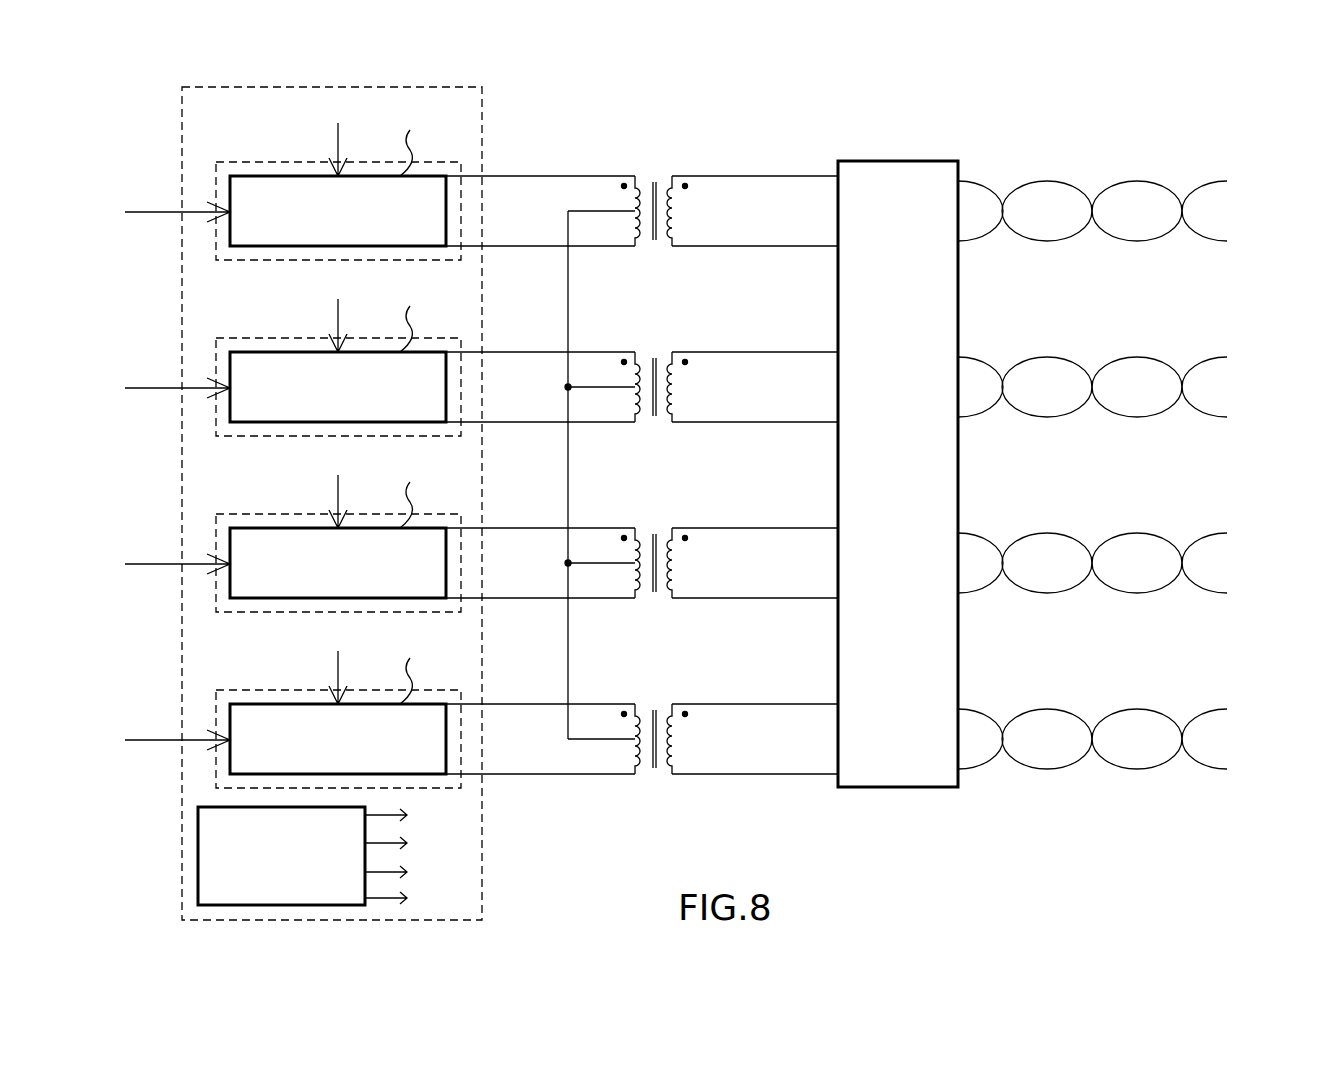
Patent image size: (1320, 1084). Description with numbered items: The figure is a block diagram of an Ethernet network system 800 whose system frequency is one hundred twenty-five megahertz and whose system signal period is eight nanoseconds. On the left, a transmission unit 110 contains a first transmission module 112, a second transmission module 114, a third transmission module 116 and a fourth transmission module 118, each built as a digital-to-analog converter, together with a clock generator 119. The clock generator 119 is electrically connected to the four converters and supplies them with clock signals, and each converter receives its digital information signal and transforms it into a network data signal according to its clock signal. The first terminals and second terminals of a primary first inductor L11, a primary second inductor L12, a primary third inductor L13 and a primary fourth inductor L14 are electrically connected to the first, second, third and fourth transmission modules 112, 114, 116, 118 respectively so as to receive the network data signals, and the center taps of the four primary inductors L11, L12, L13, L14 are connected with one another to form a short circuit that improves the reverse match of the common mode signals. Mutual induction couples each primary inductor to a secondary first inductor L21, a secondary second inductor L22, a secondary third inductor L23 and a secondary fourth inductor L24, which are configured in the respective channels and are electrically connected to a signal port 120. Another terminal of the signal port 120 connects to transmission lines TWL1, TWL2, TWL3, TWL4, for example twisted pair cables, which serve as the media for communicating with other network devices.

The Ethernet network system 800 is at (1272, 108).
The transmission unit 110 is at (482, 125).
The first transmission module 112 is at (338, 181).
The second transmission module 114 is at (338, 357).
The third transmission module 116 is at (338, 533).
The fourth transmission module 118 is at (338, 709).
The clock generator 119 is at (198, 858).
The signal port 120 is at (898, 161).
The primary first inductor L11 is at (615, 211).
The primary second inductor L12 is at (615, 387).
The primary third inductor L13 is at (615, 563).
The primary fourth inductor L14 is at (615, 739).
The secondary first inductor L21 is at (693, 211).
The secondary second inductor L22 is at (693, 387).
The secondary third inductor L23 is at (693, 563).
The secondary fourth inductor L24 is at (693, 739).
The transmission line TWL1 is at (1092, 181).
The transmission line TWL2 is at (1092, 357).
The transmission line TWL3 is at (1092, 533).
The transmission line TWL4 is at (1092, 709).